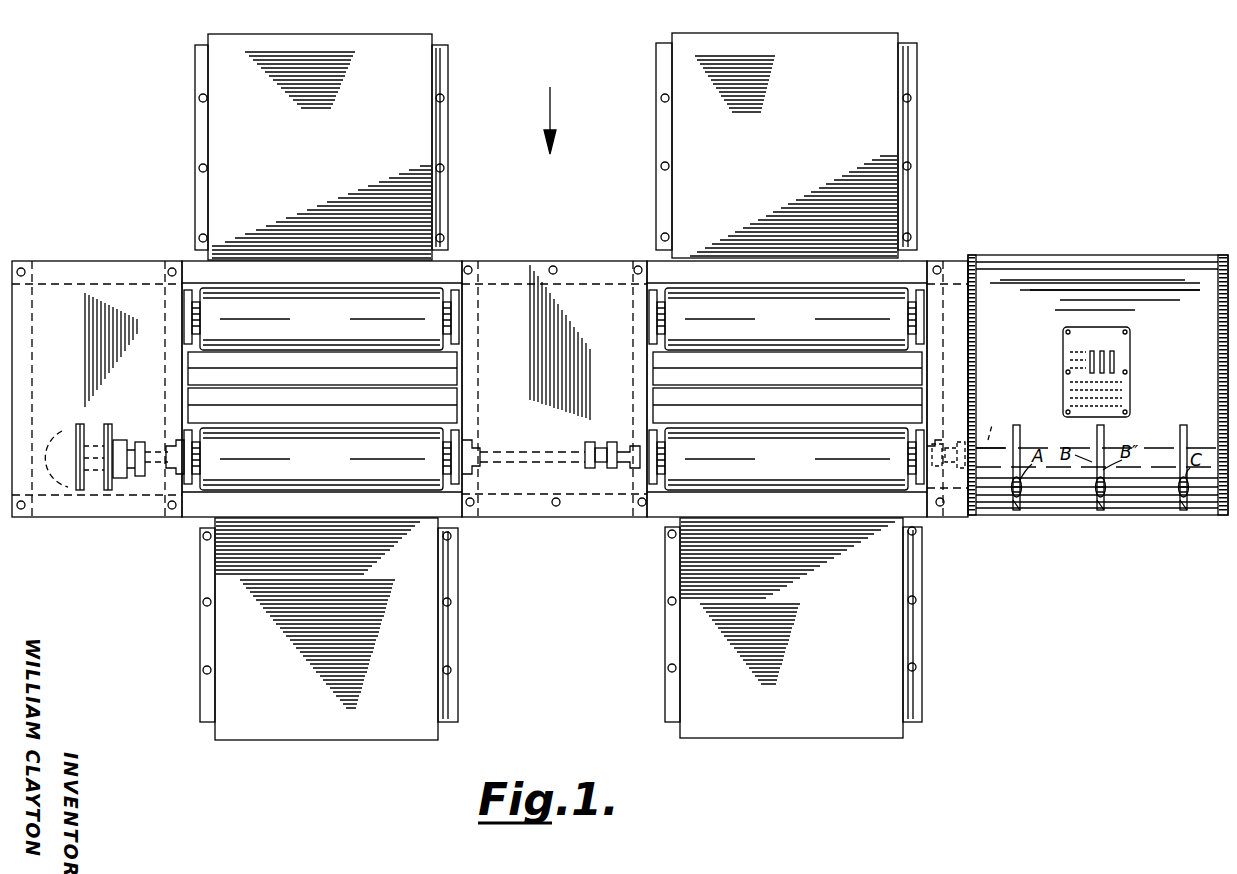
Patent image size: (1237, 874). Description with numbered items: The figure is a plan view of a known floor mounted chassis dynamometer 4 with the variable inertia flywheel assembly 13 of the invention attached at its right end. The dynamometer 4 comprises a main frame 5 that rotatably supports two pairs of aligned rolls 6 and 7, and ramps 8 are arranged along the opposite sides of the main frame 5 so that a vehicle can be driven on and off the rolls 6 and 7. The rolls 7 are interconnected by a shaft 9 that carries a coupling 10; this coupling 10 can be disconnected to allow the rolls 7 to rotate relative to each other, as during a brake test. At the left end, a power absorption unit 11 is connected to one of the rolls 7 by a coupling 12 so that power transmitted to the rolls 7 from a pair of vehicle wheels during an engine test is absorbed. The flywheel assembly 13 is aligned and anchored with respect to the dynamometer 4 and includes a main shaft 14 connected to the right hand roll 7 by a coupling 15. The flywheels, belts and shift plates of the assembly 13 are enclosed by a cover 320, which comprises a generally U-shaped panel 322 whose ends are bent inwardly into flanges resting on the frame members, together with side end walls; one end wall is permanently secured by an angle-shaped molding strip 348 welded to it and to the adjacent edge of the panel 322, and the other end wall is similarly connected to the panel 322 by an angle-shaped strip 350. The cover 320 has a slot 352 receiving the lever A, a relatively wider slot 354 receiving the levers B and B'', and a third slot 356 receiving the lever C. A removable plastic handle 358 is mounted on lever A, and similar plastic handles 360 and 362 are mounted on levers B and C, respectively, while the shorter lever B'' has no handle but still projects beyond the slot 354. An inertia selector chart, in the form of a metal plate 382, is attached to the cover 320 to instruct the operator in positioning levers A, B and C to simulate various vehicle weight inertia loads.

The chassis dynamometer 4 is at (95, 262).
The main frame 5 is at (457, 262).
The rolls 6 is at (313, 325).
The rolls 7 is at (319, 465).
The ramps 8 is at (905, 197).
The shaft 9 is at (530, 452).
The coupling 10 is at (603, 442).
The power absorption unit 11 is at (62, 431).
The coupling 12 is at (138, 442).
The variable inertia flywheel assembly 13 is at (1003, 257).
The main shaft 14 is at (988, 440).
The coupling 15 is at (940, 440).
The cover 320 is at (1078, 283).
The U-shaped panel 322 is at (1140, 262).
The angle-shaped molding strip 348 is at (970, 256).
The angle-shaped strip 350 is at (1222, 256).
The slot 352 is at (1017, 425).
The slot 354 is at (1105, 428).
The slot 356 is at (1185, 425).
The plastic handle 358 is at (1017, 510).
The plastic handle 360 is at (1098, 510).
The plastic handle 362 is at (1184, 510).
The metal plate 382 is at (1132, 340).